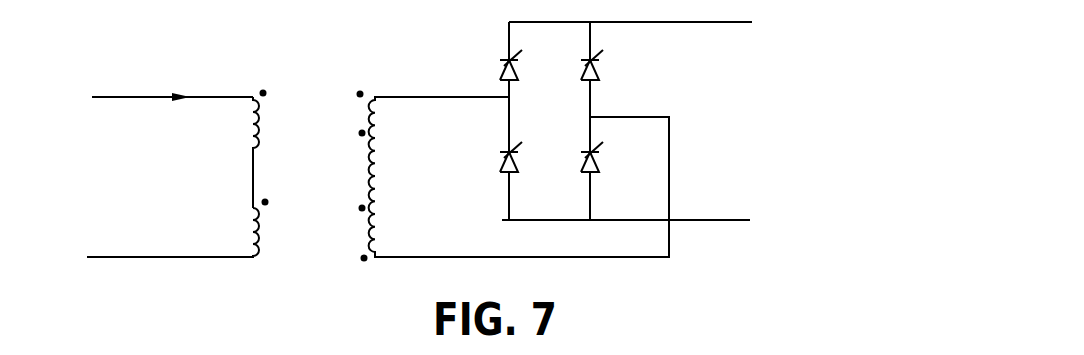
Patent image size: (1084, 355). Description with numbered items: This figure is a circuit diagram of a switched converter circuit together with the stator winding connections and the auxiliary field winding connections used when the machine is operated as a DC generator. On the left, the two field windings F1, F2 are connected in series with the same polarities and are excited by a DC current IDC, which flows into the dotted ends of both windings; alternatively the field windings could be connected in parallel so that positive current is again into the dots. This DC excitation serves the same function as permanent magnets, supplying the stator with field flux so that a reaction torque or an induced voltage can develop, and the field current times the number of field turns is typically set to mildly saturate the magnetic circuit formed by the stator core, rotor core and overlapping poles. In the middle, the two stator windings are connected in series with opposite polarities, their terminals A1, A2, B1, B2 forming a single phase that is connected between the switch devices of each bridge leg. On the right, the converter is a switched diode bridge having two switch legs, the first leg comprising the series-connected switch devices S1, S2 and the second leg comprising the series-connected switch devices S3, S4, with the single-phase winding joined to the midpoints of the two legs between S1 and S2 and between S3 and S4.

The DC current IDC is at (172, 74).
The field winding F1 is at (232, 149).
The field winding F2 is at (178, 228).
The stator winding terminal A1 is at (410, 103).
The stator winding terminal A2 is at (342, 148).
The stator winding terminal B1 is at (343, 192).
The stator winding terminal B2 is at (490, 192).
The switch device S1 is at (532, 59).
The switch device S2 is at (531, 158).
The switch device S3 is at (613, 69).
The switch device S4 is at (613, 168).